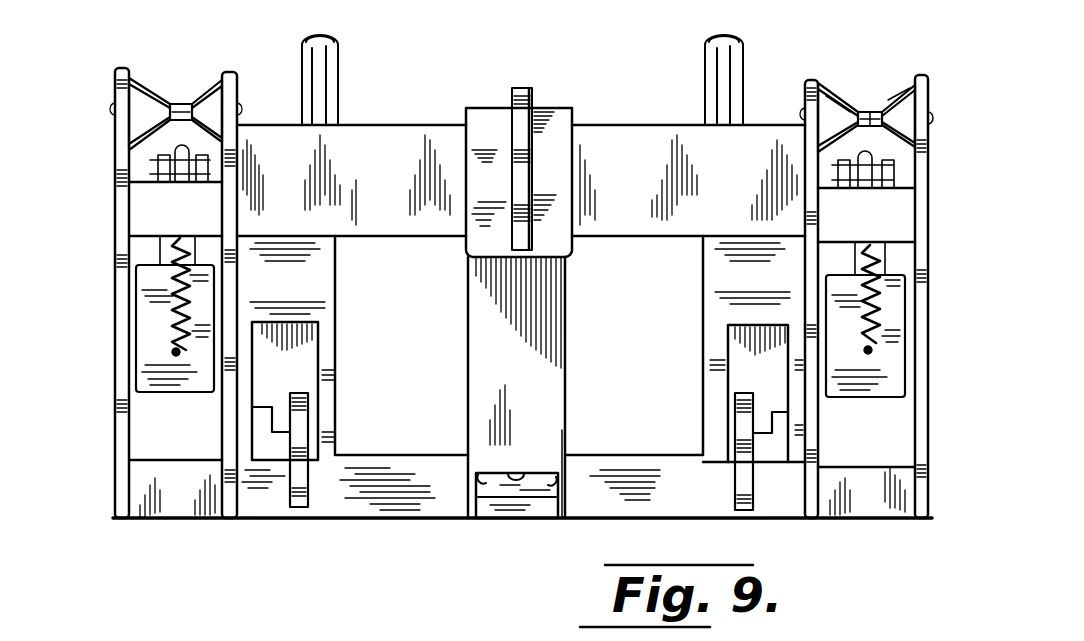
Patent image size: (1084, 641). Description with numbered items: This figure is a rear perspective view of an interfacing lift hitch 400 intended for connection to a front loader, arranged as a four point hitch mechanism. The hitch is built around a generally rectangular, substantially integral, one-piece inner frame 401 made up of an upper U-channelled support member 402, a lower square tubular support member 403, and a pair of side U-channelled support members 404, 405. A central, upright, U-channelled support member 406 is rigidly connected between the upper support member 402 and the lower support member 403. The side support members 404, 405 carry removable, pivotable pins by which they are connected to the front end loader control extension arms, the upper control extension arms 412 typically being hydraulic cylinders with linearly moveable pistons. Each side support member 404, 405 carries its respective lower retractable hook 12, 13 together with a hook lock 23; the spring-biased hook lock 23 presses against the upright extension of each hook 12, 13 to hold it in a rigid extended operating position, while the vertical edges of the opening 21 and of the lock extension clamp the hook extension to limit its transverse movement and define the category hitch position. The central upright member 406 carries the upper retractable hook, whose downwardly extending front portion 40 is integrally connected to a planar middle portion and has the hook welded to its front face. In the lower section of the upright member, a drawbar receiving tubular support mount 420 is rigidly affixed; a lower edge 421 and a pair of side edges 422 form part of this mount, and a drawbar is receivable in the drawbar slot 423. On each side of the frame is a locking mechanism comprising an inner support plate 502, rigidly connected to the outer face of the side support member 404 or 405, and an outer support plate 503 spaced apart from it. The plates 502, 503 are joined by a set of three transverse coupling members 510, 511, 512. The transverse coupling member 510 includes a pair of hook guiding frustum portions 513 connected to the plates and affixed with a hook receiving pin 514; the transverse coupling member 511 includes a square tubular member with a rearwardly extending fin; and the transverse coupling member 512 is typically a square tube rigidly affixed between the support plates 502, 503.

The retractable hook 12 is at (305, 485).
The retractable hook 13 is at (540, 108).
The opening 21 is at (273, 443).
The hook lock 23 is at (295, 360).
The front portion 40 is at (486, 125).
The interfacing lift hitch 400 is at (262, 525).
The inner frame 401 is at (404, 124).
The upper support member 402 is at (638, 150).
The lower support member 403 is at (398, 505).
The side support member 404 is at (318, 285).
The side support member 405 is at (727, 270).
The central upright support member 406 is at (492, 323).
The upper control extension arm 412 is at (310, 82).
The drawbar receiving tubular support mount 420 is at (500, 508).
The lower edge 421 is at (567, 470).
The side edge 422 is at (482, 476).
The drawbar slot 423 is at (516, 478).
The inner support plate 502 is at (818, 429).
The outer support plate 503 is at (920, 434).
The transverse coupling member 510 is at (898, 118).
The transverse coupling member 511 is at (893, 215).
The transverse coupling member 512 is at (885, 498).
The hook guiding frustum portion 513 is at (833, 114).
The hook receiving pin 514 is at (870, 115).